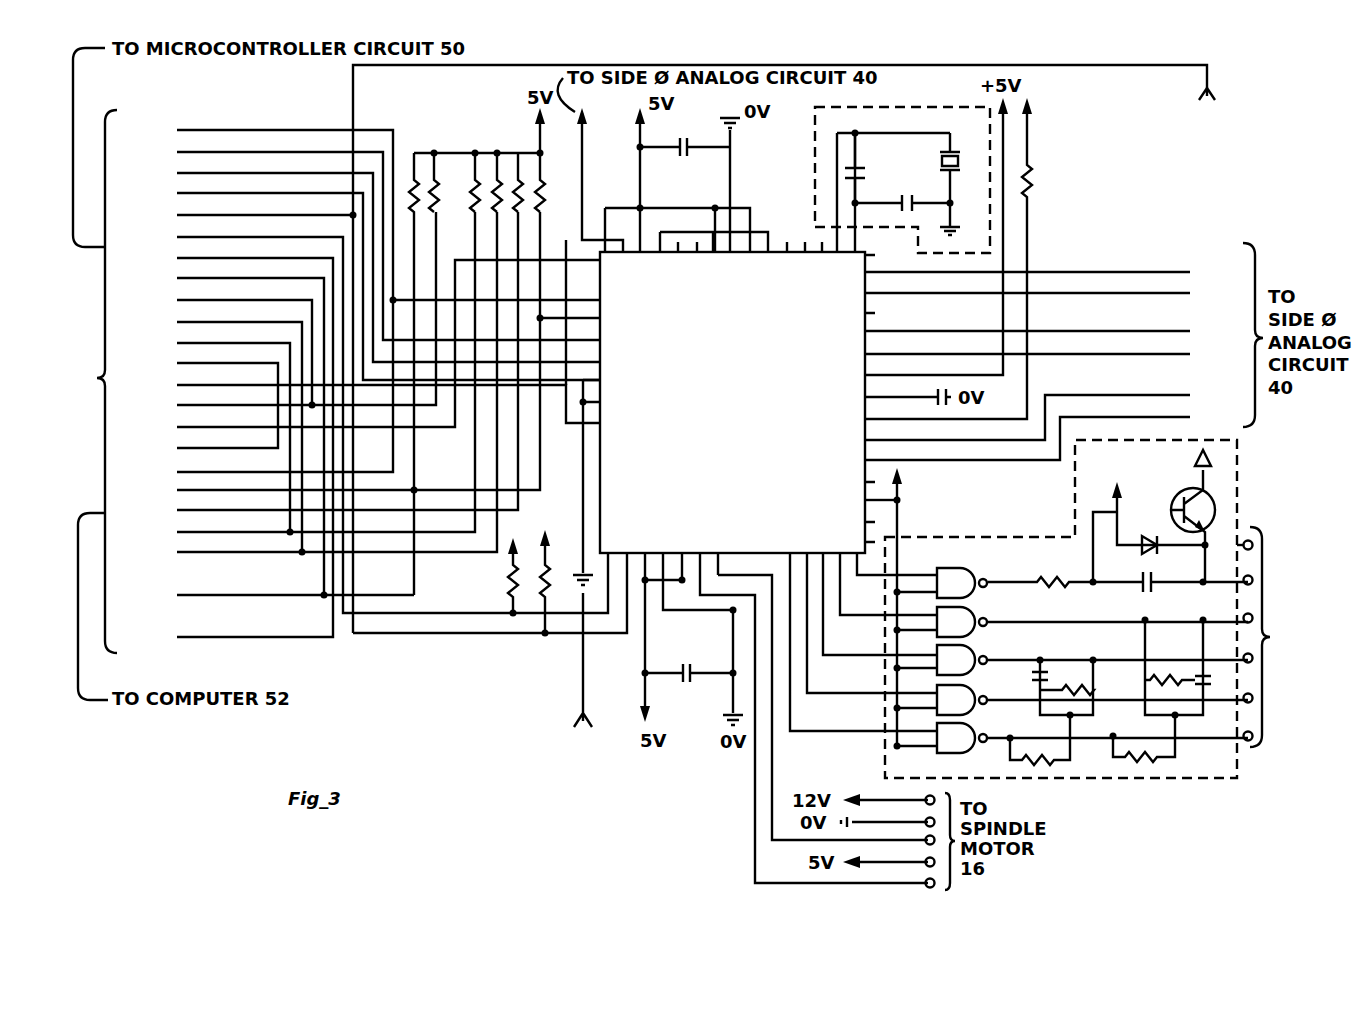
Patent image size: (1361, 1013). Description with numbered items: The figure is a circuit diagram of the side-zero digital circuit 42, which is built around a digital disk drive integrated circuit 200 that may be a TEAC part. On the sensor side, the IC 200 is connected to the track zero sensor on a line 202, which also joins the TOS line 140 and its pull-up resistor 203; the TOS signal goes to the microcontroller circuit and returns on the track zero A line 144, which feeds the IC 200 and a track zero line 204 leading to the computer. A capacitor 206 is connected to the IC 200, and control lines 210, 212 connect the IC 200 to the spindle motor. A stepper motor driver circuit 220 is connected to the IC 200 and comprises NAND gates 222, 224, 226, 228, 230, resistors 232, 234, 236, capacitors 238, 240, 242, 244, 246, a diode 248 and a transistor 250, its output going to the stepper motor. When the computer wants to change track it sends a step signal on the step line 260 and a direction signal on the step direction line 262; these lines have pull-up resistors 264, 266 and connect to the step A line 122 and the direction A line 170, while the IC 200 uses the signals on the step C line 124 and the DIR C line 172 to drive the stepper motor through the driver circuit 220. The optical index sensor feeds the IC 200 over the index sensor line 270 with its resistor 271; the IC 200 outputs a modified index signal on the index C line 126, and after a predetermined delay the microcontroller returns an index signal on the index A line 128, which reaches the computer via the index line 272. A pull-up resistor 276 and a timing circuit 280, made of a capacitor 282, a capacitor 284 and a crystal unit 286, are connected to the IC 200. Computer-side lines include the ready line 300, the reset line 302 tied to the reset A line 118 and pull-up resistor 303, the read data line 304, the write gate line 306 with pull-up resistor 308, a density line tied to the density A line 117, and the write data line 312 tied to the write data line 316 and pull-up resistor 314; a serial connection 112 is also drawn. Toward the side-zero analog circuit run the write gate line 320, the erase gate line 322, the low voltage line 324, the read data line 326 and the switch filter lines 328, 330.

The side-zero digital circuit 42 is at (1075, 655).
The serial/ready line 112 is at (176, 363).
The density A line 117 is at (176, 278).
The reset A line 118 is at (176, 300).
The step A line 122 is at (176, 343).
The step C line 124 is at (176, 152).
The index C line 126 is at (176, 193).
The index A line 128 is at (176, 258).
The TOS line 140 is at (176, 237).
The track zero A line 144 is at (176, 130).
The direction A line 170 is at (176, 322).
The DIR C line 172 is at (176, 173).
The digital disk drive integrated circuit 200 is at (714, 423).
The line 202 is at (580, 684).
The pull-up resistor 203 is at (508, 571).
The track zero line 204 is at (176, 472).
The capacitor 206 is at (700, 654).
The control line 210 is at (752, 787).
The control line 212 is at (770, 782).
The stepper motor driver circuit 220 is at (1024, 537).
The NAND gate 222 is at (950, 563).
The NAND gate 224 is at (982, 608).
The NAND gate 226 is at (982, 646).
The NAND gate 228 is at (982, 685).
The NAND gate 230 is at (985, 722).
The resistor 232 is at (1022, 765).
The resistor 234 is at (1162, 758).
The resistor 236 is at (1066, 572).
The capacitor 238 is at (1045, 668).
The capacitor 240 is at (1067, 694).
The capacitor 242 is at (1134, 678).
The capacitor 244 is at (1197, 674).
The capacitor 246 is at (1148, 592).
The diode 248 is at (1141, 540).
The transistor 250 is at (1218, 502).
The step line 260 is at (176, 532).
The step direction line 262 is at (176, 552).
The pull-up resistor 264 is at (496, 152).
The pull-up resistor 266 is at (476, 222).
The index sensor line 270 is at (176, 215).
The resistor 271 is at (544, 633).
The index line 272 is at (176, 637).
The pull-up resistor 276 is at (1032, 180).
The timing circuit 280 is at (815, 178).
The capacitor 282 is at (867, 173).
The capacitor 284 is at (906, 188).
The crystal unit 286 is at (668, 164).
The ready line 300 is at (176, 385).
The reset line 302 is at (176, 405).
The pull-up resistor 303 is at (438, 192).
The read data line 304 is at (176, 427).
The write gate line 306 is at (176, 490).
The pull-up resistor 308 is at (540, 158).
The write data line 312 is at (176, 510).
The pull-up resistor 314 is at (519, 160).
The write data line 316 is at (176, 595).
The write gate line 320 is at (1184, 274).
The erase gate line 322 is at (1184, 295).
The low voltage line 324 is at (1184, 333).
The read data line 326 is at (1184, 356).
The switch filter line 328 is at (1184, 397).
The switch filter line 330 is at (1184, 419).